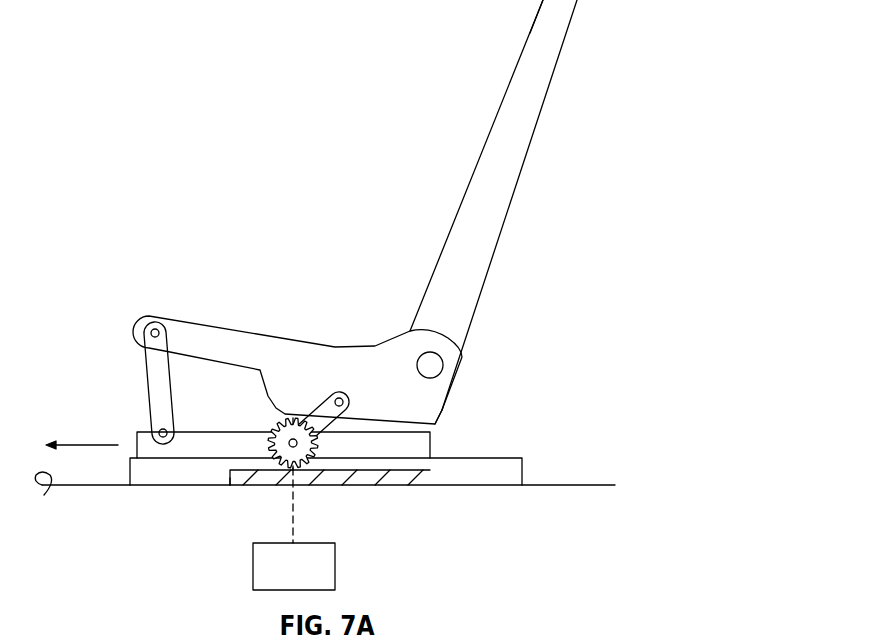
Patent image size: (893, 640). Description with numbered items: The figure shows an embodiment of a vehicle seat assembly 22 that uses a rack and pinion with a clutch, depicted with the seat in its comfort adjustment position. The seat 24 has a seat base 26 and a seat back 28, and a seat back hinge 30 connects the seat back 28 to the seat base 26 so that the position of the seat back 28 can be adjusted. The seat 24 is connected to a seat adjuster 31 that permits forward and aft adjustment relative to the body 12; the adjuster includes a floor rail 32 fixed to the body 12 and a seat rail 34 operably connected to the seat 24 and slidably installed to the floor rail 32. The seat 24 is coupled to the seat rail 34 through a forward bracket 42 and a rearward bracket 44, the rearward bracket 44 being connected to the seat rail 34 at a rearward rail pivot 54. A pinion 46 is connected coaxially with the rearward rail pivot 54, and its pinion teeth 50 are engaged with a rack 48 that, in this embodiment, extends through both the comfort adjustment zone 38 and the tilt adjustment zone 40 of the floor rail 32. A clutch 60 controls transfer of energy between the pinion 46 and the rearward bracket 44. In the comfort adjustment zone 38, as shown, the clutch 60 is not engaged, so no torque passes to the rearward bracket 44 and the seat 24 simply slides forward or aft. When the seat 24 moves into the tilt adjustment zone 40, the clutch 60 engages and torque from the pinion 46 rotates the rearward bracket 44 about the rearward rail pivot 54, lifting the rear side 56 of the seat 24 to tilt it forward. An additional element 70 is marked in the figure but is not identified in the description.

The body 12 is at (44, 495).
The seat assembly 22 is at (297, 108).
The seat 24 is at (498, 107).
The seat base 26 is at (213, 327).
The seat back 28 is at (532, 75).
The seat back hinge 30 is at (444, 364).
The seat adjuster 31 is at (120, 432).
The floor rail 32 is at (448, 475).
The seat rail 34 is at (430, 448).
The comfort adjustment zone 38 is at (375, 500).
The tilt adjustment zone 40 is at (233, 501).
The forward bracket 42 is at (152, 387).
The rearward bracket 44 is at (330, 390).
The pinion 46 is at (275, 428).
The rack 48 is at (263, 482).
The pinion teeth 50 is at (305, 464).
The rearward rail pivot 54 is at (293, 420).
The rear side 56 is at (442, 410).
The clutch 60 is at (335, 565).
The sensor system 70 is at (215, 582).